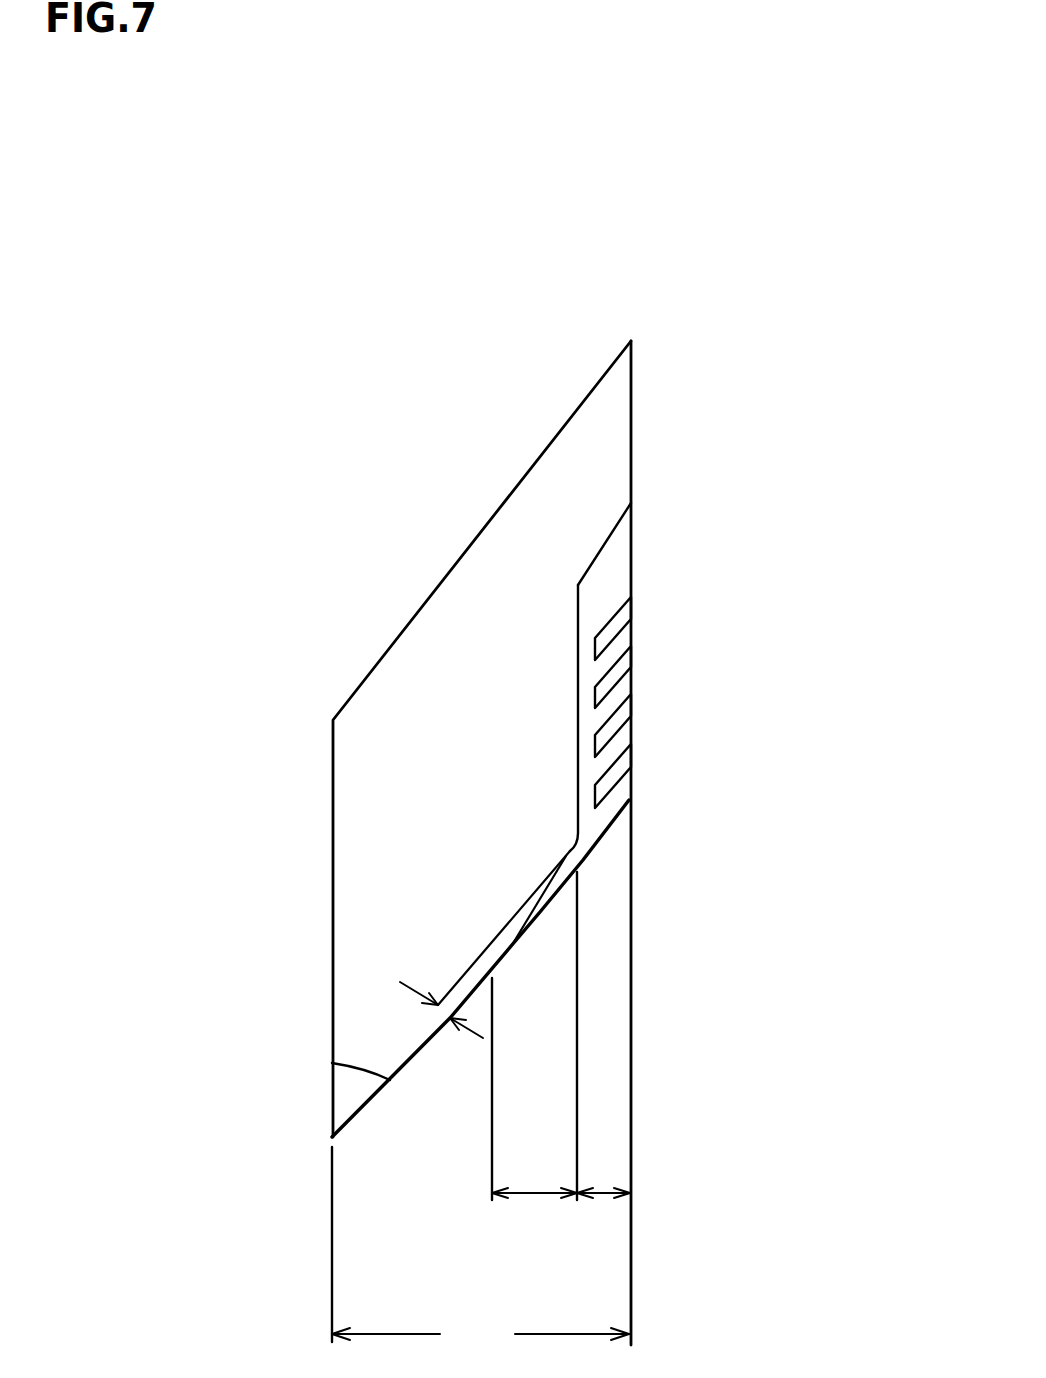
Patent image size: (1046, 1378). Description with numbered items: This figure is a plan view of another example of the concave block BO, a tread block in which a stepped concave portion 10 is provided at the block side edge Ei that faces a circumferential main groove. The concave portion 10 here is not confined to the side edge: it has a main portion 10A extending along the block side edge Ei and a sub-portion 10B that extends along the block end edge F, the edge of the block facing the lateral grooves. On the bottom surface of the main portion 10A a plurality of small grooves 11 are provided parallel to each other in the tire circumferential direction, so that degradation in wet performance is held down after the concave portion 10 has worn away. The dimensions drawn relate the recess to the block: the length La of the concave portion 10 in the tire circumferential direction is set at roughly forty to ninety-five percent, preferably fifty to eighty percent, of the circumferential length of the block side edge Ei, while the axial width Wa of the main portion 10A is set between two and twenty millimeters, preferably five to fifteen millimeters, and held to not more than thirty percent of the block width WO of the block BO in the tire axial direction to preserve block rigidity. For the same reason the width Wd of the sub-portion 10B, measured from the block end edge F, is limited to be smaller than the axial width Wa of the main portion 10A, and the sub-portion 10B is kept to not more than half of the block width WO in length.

The concave block BO is at (486, 789).
The block side edge Ei is at (631, 413).
The block end edge F is at (405, 1065).
The concave portion 10 is at (666, 754).
The main portion 10A is at (698, 703).
The sub-portion 10B is at (552, 893).
The small grooves 11 is at (631, 700).
The width of the sub-portion Wd is at (437, 1008).
The length of the concave portion La is at (533, 1193).
The axial width of the concave portion Wa is at (603, 1193).
The block width WO is at (480, 1251).